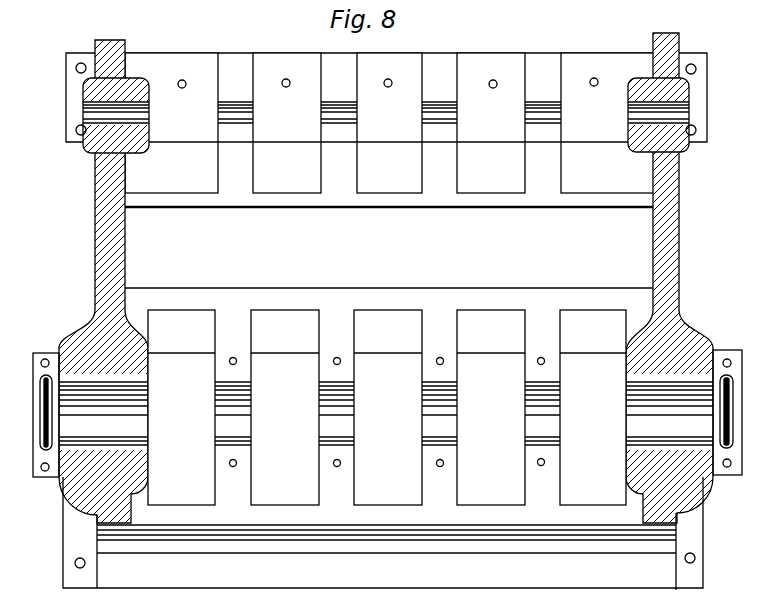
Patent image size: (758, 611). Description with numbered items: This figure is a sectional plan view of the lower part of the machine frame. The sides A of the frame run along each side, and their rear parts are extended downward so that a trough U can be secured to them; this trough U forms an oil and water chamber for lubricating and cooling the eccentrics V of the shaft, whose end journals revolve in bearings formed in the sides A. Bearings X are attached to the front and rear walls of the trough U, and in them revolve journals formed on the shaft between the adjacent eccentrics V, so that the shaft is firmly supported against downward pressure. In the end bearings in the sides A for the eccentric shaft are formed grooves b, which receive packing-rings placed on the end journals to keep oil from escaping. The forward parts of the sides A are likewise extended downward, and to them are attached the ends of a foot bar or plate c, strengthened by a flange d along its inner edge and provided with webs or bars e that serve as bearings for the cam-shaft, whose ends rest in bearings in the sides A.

The sides of the frame A is at (386, 311).
The grooves b is at (380, 413).
The foot bar or plate c is at (390, 123).
The flange d is at (390, 201).
The webs or bars e is at (386, 129).
The trough U is at (387, 407).
The eccentrics v is at (386, 426).
The bearings x is at (386, 407).